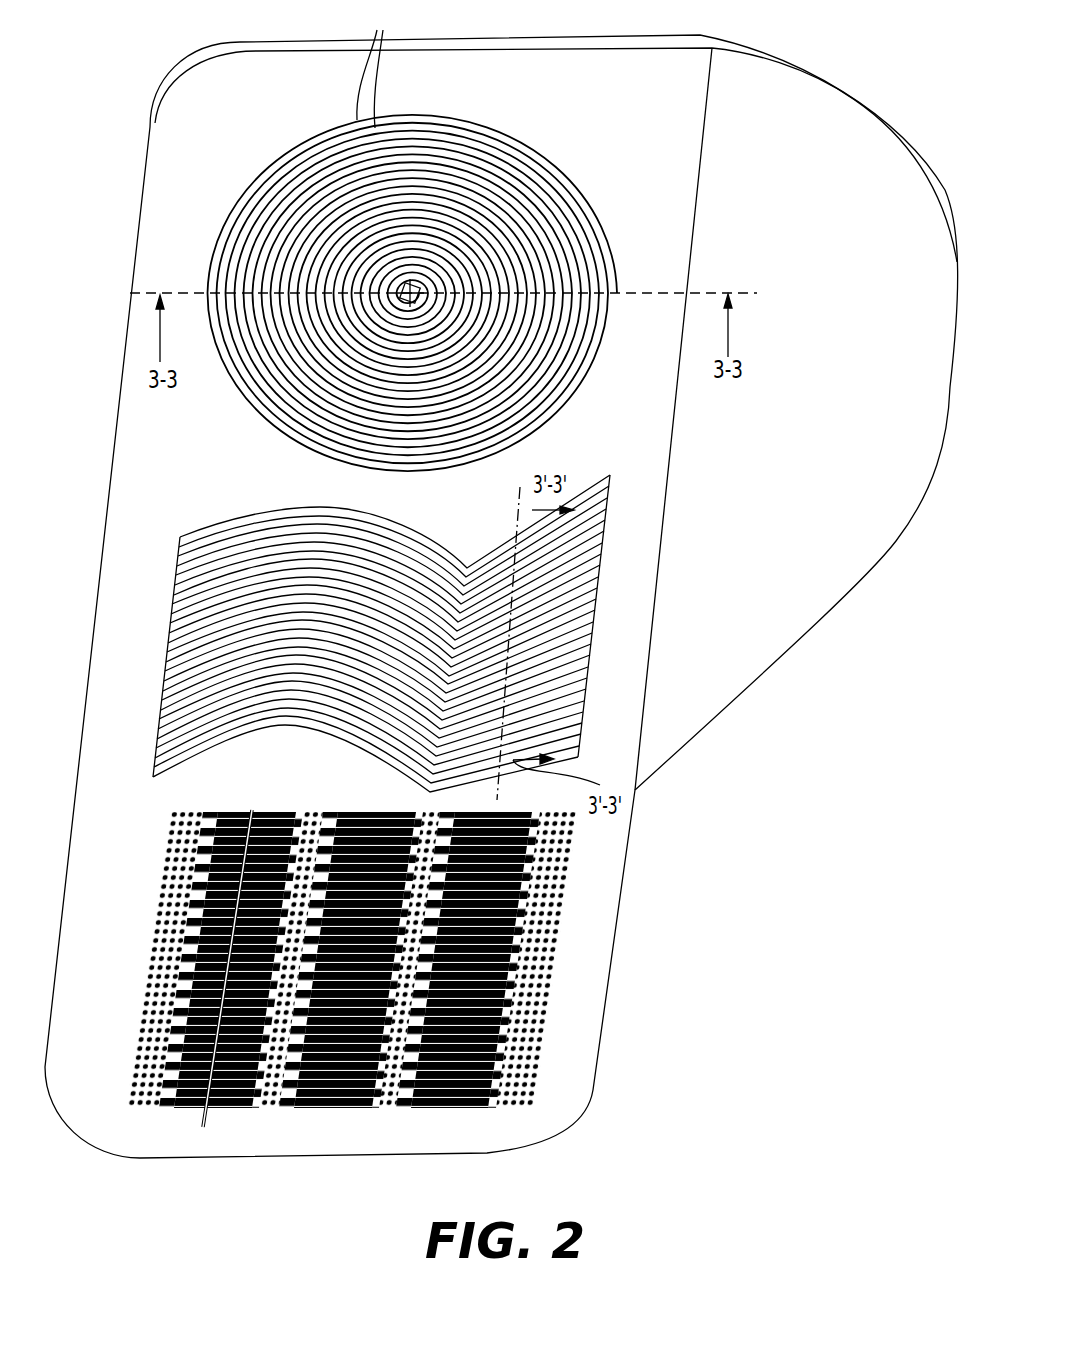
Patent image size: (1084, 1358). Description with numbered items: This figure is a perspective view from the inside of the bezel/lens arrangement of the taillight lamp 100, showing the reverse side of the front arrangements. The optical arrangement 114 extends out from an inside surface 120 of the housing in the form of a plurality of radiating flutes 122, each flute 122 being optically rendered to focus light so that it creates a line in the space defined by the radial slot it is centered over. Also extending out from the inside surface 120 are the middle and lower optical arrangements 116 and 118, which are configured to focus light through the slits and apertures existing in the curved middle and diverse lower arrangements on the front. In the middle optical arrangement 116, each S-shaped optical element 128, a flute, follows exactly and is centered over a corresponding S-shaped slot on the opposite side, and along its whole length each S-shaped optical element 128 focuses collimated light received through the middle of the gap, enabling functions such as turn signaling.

The lamp 100 is at (700, 845).
The optical arrangement 114 is at (515, 118).
The middle optical arrangement 116 is at (440, 545).
The lower optical arrangement 118 is at (250, 808).
The inside surface 120 is at (300, 127).
The radiating flutes 122 is at (375, 65).
The S-shaped optical element 128 is at (221, 529).